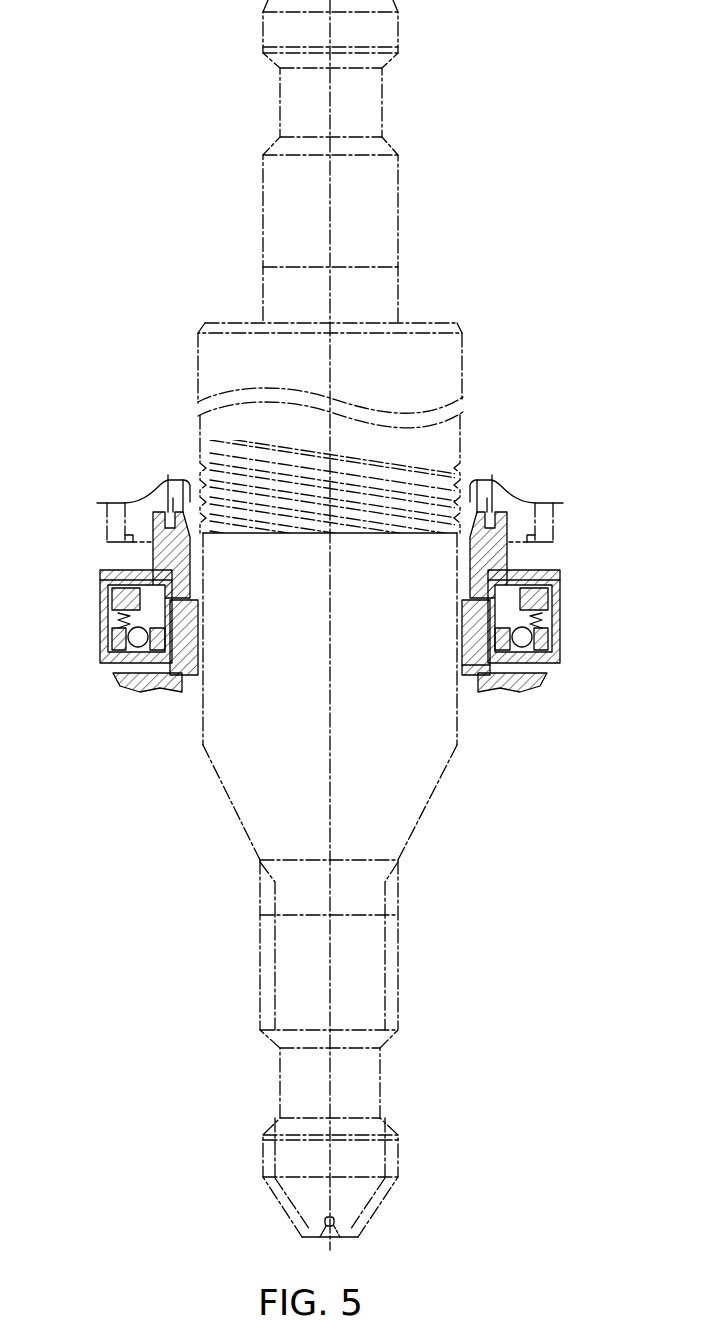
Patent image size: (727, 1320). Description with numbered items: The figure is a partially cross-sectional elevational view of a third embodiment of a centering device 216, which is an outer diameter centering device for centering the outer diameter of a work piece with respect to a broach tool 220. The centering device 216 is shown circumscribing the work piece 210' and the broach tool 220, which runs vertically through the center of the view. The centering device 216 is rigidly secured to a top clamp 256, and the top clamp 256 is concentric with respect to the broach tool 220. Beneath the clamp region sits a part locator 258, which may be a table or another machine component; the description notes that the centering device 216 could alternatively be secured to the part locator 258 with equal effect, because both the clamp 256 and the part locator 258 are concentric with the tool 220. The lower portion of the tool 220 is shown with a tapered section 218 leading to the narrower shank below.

The top clamp 256 is at (153, 560).
The centering device 216 is at (86, 637).
The broach tool 220 is at (237, 717).
The tapered section 218 is at (330, 790).
The work piece 210' is at (544, 688).
The part locator 258 is at (498, 690).